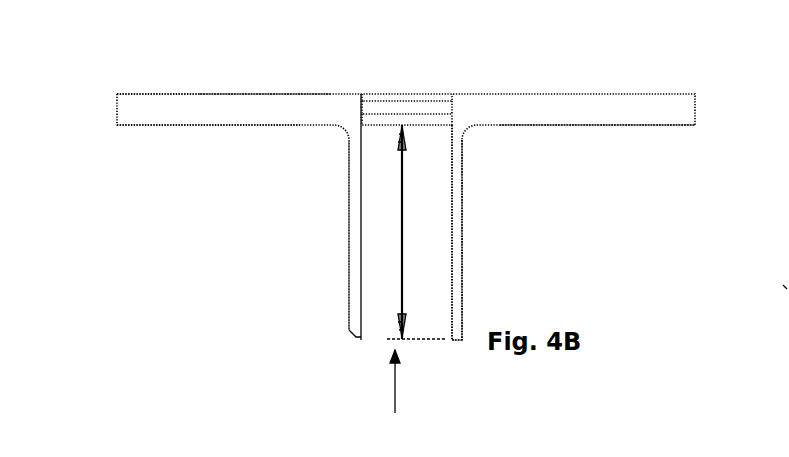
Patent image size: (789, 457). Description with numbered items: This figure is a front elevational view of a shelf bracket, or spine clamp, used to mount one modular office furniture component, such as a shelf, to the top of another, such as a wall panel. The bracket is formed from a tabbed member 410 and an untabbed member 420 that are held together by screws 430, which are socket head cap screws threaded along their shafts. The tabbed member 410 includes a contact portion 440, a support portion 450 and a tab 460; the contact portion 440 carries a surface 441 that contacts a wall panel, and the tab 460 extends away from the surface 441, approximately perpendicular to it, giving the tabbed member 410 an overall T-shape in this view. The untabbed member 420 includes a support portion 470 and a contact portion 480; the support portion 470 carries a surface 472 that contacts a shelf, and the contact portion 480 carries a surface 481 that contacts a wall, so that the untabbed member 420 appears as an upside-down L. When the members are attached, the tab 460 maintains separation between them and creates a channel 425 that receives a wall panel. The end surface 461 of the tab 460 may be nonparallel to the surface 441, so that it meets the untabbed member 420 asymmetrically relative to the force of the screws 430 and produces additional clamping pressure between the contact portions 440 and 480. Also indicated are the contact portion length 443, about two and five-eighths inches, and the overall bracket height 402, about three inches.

The tabbed member 410 is at (594, 108).
The untabbed member 420 is at (247, 108).
The surface 472 is at (148, 91).
The support portion 470 is at (186, 122).
The support portion 450 is at (580, 115).
The tab 460 is at (440, 93).
The screws 430 is at (408, 106).
The end surface 461 is at (377, 117).
The contact portion 480 is at (356, 225).
The surface 481 is at (362, 332).
The contact portion 440 is at (462, 227).
The surface 441 is at (450, 323).
The contact portion length 443 is at (402, 281).
The channel 425 is at (400, 396).
The bracket height 402 is at (766, 290).